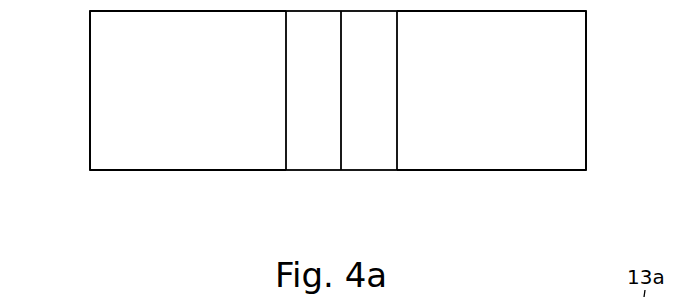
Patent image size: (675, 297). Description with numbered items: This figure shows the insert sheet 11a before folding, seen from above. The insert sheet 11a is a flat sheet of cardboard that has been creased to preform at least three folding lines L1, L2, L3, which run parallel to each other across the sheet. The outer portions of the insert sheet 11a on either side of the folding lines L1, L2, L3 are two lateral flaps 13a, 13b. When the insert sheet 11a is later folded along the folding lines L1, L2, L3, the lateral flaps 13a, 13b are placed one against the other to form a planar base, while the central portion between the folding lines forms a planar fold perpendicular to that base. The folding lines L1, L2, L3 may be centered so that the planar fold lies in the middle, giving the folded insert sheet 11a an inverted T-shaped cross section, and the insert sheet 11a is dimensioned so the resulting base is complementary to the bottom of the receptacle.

The insert sheet 11a is at (203, 180).
The lateral flap 13a is at (100, 78).
The lateral flap 13b is at (567, 68).
The folding line L1 is at (286, 148).
The folding line L2 is at (341, 148).
The folding line L3 is at (397, 148).